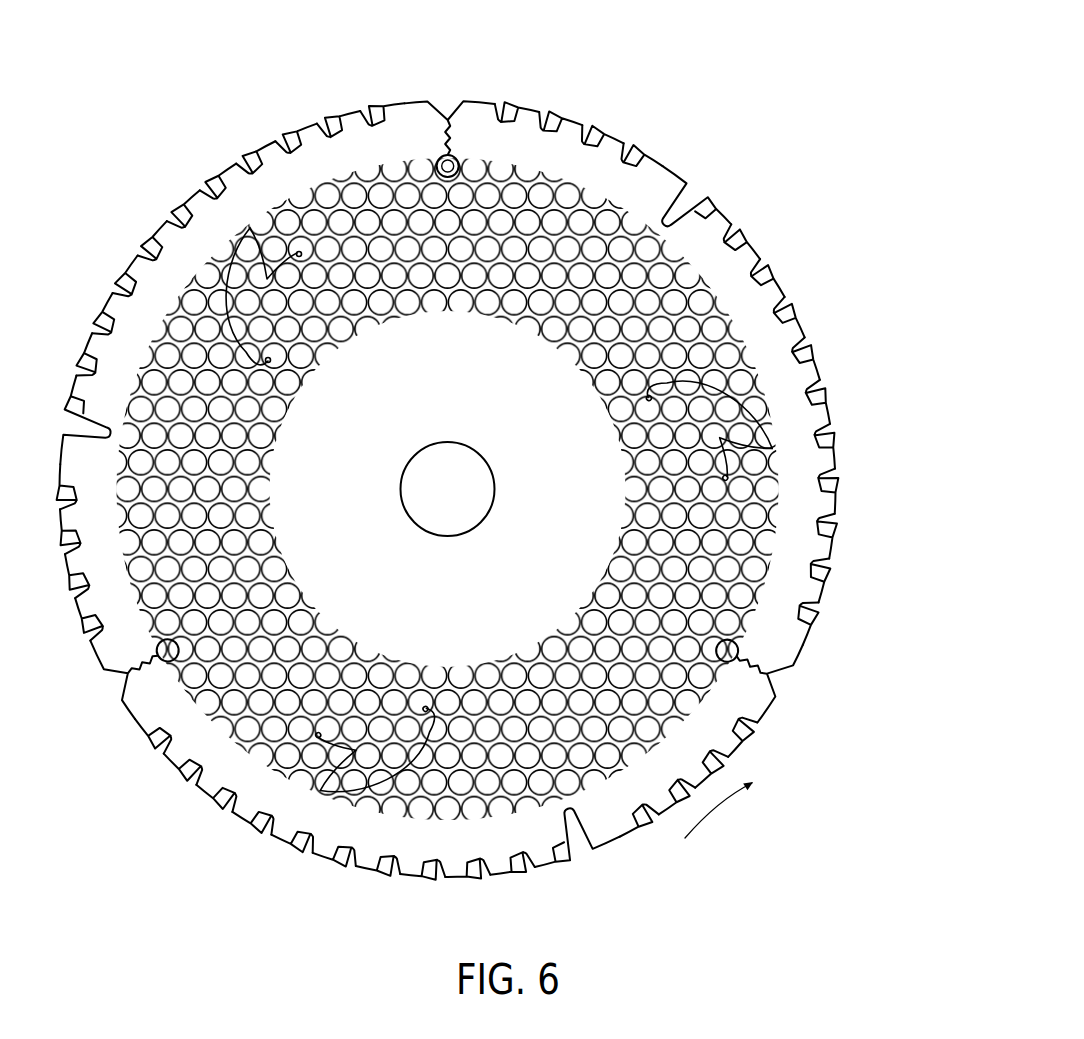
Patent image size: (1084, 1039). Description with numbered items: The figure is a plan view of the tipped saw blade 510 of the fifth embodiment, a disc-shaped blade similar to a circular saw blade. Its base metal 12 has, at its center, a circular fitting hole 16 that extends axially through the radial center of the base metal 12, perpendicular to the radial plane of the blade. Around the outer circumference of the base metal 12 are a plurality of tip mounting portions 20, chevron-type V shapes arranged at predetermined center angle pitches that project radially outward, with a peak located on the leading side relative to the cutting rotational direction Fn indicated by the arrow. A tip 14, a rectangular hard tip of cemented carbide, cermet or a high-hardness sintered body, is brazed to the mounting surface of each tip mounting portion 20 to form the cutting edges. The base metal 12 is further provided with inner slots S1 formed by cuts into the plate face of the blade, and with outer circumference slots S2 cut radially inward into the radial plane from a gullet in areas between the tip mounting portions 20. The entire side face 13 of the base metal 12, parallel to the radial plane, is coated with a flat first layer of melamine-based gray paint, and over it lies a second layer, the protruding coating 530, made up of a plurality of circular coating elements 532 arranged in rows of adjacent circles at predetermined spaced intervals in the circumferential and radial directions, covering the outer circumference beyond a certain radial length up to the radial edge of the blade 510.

The tipped saw blade 510 is at (668, 136).
The base metal 12 is at (467, 446).
The side face 13 is at (718, 278).
The tip 14 is at (738, 222).
The tip mounting portion 20 is at (800, 317).
The fitting hole 16 is at (420, 455).
The coating element 532 is at (531, 489).
The protruding coating 530 is at (747, 607).
The inner slot S1 is at (250, 228).
The outer circumference slot S2 is at (442, 119).
The cutting rotational direction Fn is at (721, 815).